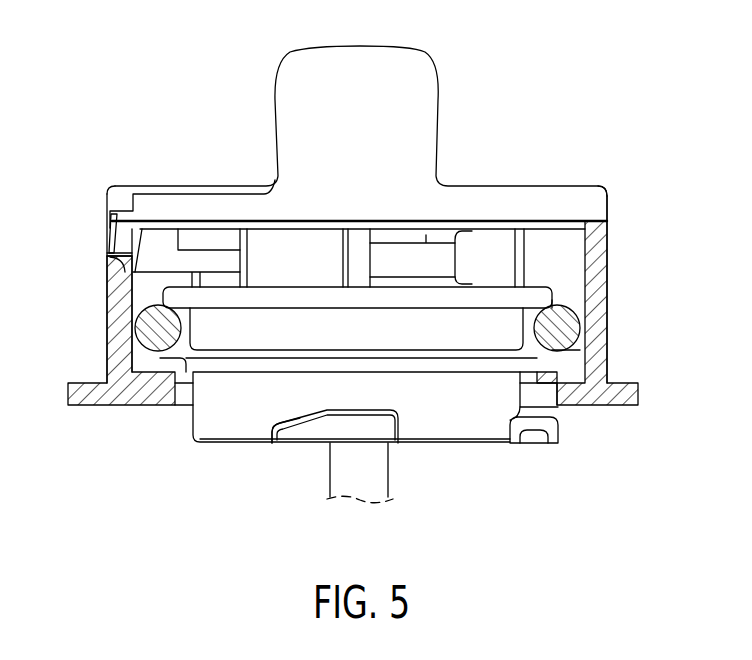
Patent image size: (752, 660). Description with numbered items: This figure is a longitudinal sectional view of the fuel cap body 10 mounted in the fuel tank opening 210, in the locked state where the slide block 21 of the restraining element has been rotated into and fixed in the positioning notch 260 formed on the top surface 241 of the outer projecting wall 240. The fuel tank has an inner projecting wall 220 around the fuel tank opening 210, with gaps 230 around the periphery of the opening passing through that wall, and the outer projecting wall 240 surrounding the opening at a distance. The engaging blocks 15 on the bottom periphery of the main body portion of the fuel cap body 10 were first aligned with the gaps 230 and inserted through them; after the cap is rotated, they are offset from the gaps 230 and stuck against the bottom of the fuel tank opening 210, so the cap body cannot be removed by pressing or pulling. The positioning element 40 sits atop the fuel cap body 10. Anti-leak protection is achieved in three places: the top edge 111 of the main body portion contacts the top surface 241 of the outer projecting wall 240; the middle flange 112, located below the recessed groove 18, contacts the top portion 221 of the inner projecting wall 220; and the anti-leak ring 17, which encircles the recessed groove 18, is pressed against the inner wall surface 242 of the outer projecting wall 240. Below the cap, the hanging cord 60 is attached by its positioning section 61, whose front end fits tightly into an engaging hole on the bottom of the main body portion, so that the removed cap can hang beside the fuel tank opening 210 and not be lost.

The fuel cap body 10 is at (545, 180).
The positioning element 40 is at (128, 176).
The top edge 111 is at (604, 203).
The recessed groove 18 is at (535, 328).
The slide block 21 is at (122, 237).
The top surface 241 is at (597, 240).
The positioning notch 260 is at (115, 273).
The inner wall surface 242 is at (567, 282).
The anti-leak ring 17 is at (558, 328).
The outer projecting wall 240 is at (117, 323).
The middle flange 112 is at (545, 359).
The top portion 221 is at (167, 360).
The inner projecting wall 220 is at (565, 380).
The fuel tank opening 210 is at (188, 400).
The engaging blocks 15 is at (290, 432).
The hanging cord 60 is at (316, 484).
The positioning section 61 is at (358, 468).
The gaps 230 is at (567, 402).